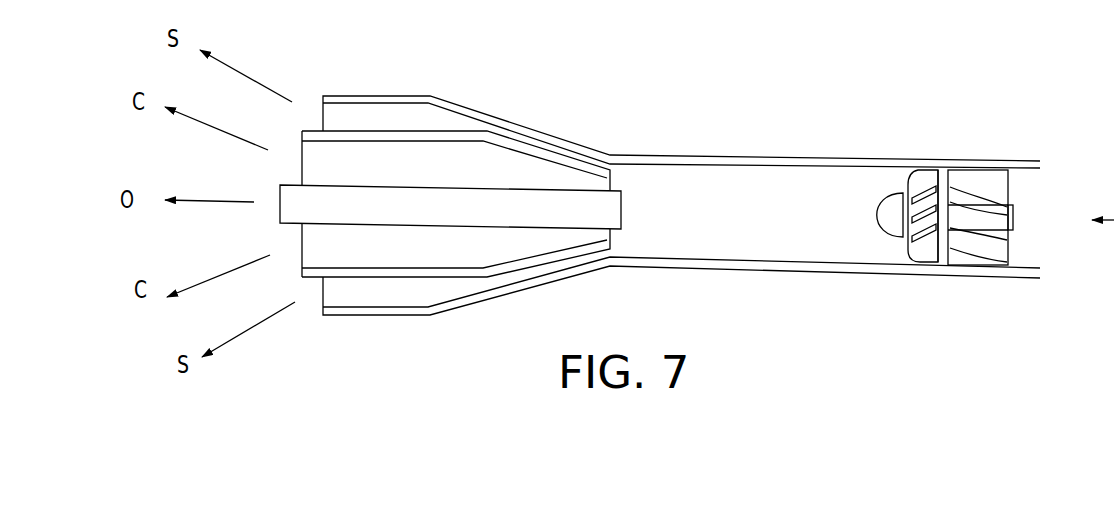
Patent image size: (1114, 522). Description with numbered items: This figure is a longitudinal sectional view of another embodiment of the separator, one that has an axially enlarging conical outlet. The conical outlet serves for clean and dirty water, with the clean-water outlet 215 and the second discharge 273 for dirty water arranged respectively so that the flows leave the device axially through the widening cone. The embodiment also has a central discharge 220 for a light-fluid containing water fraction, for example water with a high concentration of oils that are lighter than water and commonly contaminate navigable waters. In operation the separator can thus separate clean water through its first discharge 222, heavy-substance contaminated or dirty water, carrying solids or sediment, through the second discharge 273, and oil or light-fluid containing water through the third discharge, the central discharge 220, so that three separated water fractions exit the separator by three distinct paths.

The axially enlarging conical outlet for clean water 215 is at (678, 267).
The central discharge 220 is at (397, 223).
The first discharge 222 is at (360, 130).
The second discharge 273 is at (543, 148).